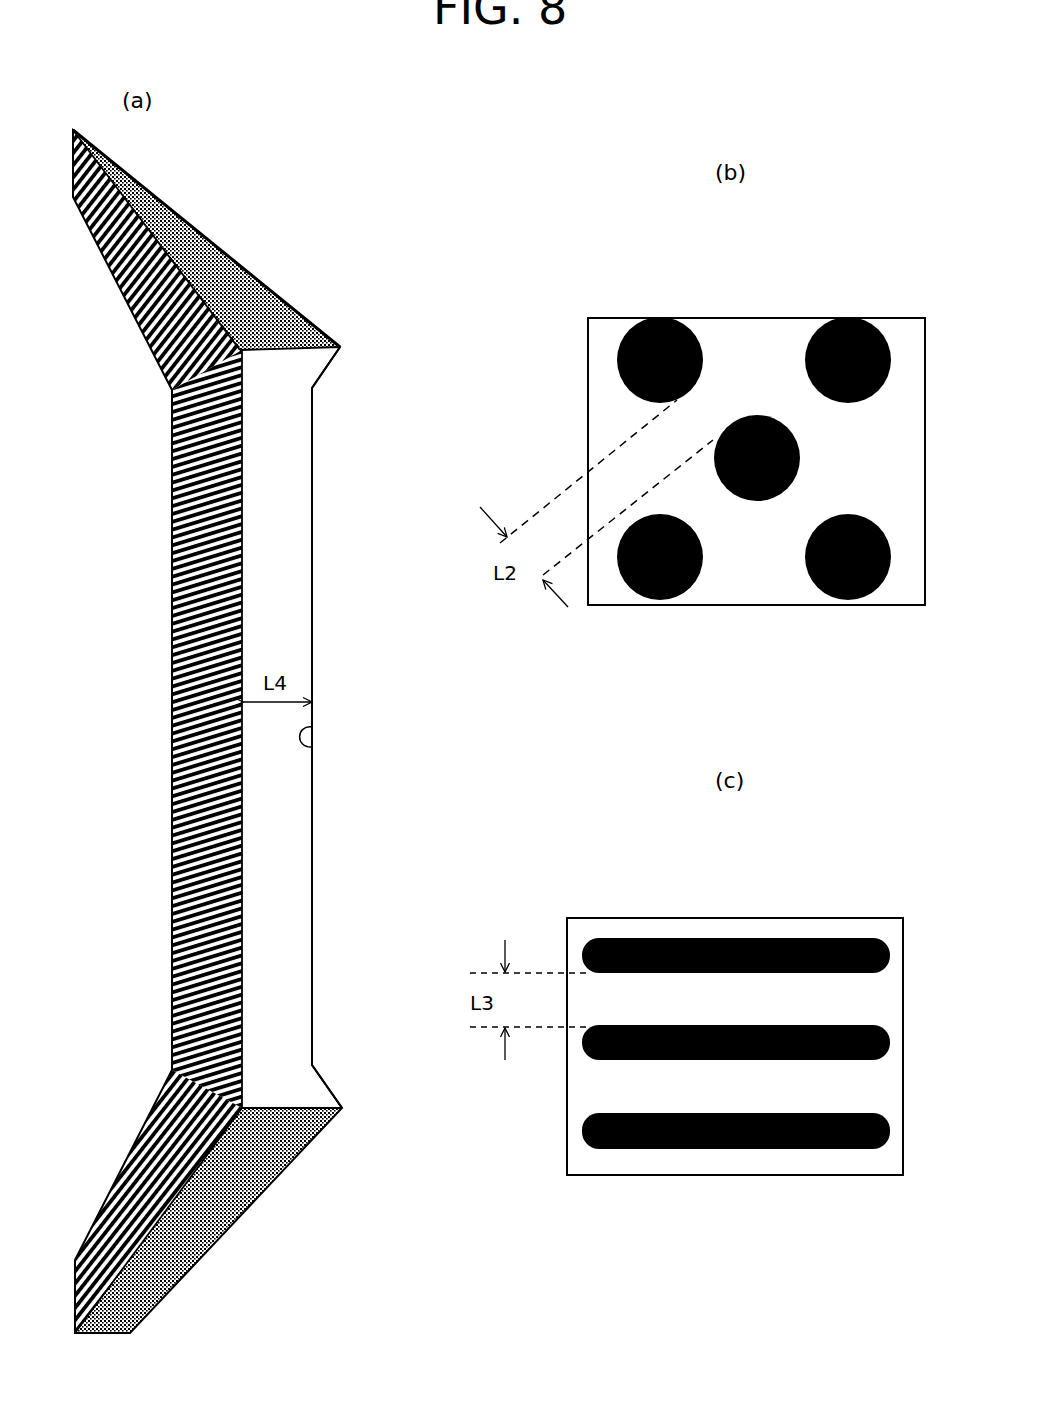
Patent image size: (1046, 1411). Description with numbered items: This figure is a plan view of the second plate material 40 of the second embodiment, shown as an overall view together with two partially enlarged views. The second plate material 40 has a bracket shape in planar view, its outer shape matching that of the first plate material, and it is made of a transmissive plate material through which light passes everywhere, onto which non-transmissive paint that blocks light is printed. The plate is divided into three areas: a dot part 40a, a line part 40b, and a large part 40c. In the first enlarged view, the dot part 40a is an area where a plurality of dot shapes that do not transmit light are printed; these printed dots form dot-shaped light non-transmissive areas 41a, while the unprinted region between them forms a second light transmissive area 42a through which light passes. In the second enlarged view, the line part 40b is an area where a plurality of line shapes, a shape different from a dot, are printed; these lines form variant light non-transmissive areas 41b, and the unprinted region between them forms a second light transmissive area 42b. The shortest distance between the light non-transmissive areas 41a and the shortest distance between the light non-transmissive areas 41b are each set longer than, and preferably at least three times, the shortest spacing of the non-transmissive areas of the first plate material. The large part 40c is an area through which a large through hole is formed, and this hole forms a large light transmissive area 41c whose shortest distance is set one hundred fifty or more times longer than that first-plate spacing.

The second plate material 40 is at (258, 208).
The dot part 40a is at (230, 262).
The line part 40b is at (167, 515).
The large part 40c is at (293, 570).
The dot-shaped light non-transmissive areas 41a is at (757, 450).
The variant light non-transmissive areas 41b is at (683, 1037).
The large light transmissive area 41c is at (313, 728).
The second light transmissive area 42a is at (870, 607).
The second light transmissive area 42b is at (843, 1165).